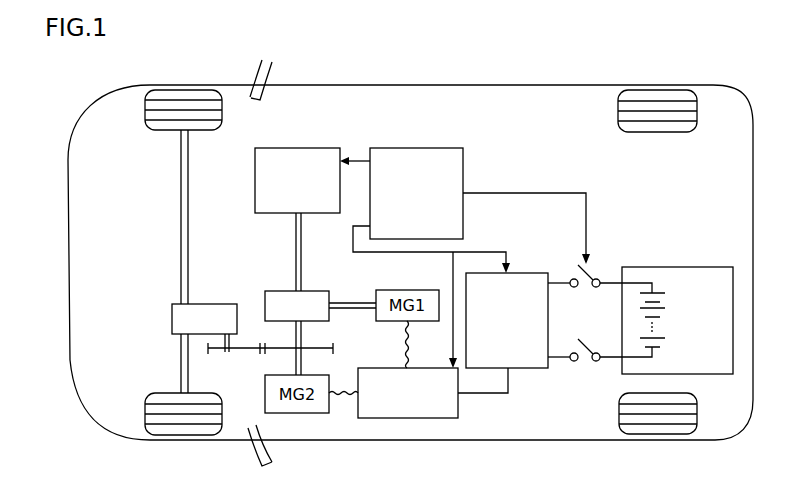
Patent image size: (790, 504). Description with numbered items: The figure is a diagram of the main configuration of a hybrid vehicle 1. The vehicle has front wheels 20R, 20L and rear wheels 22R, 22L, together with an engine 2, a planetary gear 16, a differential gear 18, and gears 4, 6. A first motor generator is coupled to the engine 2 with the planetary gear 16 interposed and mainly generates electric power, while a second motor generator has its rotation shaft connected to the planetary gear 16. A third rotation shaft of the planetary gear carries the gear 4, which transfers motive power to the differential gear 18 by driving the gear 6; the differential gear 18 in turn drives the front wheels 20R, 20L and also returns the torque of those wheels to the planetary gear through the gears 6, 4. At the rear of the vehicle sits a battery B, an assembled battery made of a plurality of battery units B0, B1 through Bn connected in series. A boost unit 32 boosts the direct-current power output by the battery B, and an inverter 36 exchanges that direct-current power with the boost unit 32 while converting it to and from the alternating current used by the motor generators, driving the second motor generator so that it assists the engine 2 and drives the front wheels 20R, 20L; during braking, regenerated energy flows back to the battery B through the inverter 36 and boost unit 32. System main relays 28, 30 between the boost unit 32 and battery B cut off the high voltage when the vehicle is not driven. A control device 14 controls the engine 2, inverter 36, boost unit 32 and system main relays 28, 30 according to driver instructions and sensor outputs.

The hybrid vehicle 1 is at (572, 83).
The engine 2 is at (323, 148).
The gear 4 is at (333, 352).
The gear 6 is at (217, 350).
The control device 14 is at (431, 148).
The planetary gear 16 is at (280, 291).
The differential gear 18 is at (172, 317).
The front wheel 20R is at (170, 90).
The front wheel 20L is at (170, 435).
The rear wheel 22R is at (645, 90).
The rear wheel 22L is at (645, 434).
The system main relay 28 is at (574, 288).
The system main relay 30 is at (577, 362).
The boost unit 32 is at (532, 368).
The inverter 36 is at (418, 418).
The battery B is at (677, 374).
The battery unit B0 is at (670, 299).
The battery unit B1 is at (666, 314).
The battery unit Bn is at (667, 342).